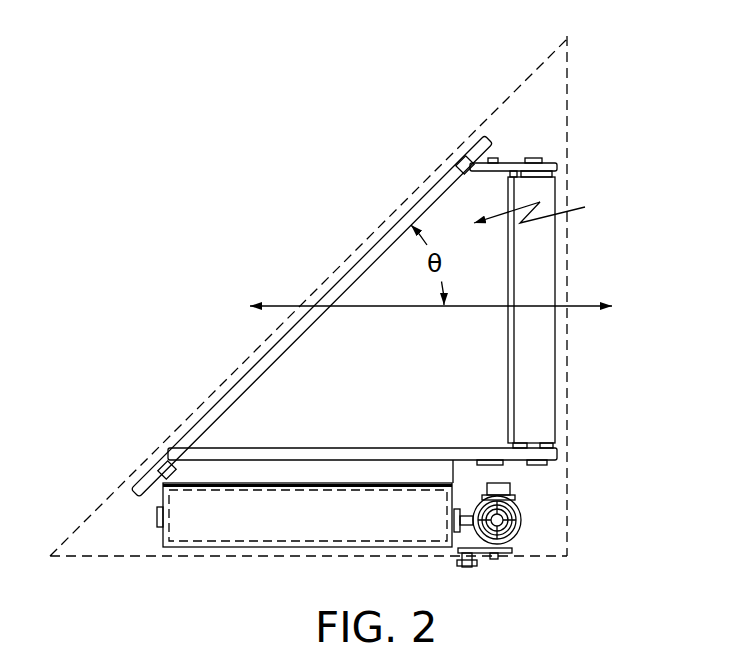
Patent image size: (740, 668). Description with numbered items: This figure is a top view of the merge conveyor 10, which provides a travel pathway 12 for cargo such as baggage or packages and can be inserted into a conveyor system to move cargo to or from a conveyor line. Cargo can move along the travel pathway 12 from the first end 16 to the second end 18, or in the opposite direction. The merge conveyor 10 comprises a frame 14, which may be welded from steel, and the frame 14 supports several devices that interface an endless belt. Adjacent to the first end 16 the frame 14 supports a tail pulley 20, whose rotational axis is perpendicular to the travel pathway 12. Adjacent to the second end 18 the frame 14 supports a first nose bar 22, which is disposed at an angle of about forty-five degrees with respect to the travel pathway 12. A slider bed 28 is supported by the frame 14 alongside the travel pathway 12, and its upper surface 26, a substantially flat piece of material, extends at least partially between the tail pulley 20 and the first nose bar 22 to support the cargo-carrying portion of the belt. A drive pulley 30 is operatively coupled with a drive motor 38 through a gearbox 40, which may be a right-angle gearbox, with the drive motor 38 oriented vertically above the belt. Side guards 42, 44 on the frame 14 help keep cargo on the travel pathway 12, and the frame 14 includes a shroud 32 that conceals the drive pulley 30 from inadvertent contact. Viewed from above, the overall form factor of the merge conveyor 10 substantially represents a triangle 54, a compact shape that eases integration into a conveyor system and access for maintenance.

The merge conveyor 10 is at (100, 235).
The travel pathway 12 is at (585, 310).
The frame 14 is at (557, 455).
The first end 16 is at (632, 400).
The second end 18 is at (147, 378).
The tail pulley 20 is at (548, 274).
The first nose bar 22 is at (370, 258).
The surface 26 is at (432, 368).
The slider bed 28 is at (548, 207).
The drive pulley 30 is at (317, 538).
The shroud 32 is at (168, 547).
The drive motor 38 is at (522, 518).
The gearbox 40 is at (510, 548).
The side guard 42 is at (497, 162).
The side guard 44 is at (485, 451).
The triangle 54 is at (568, 124).